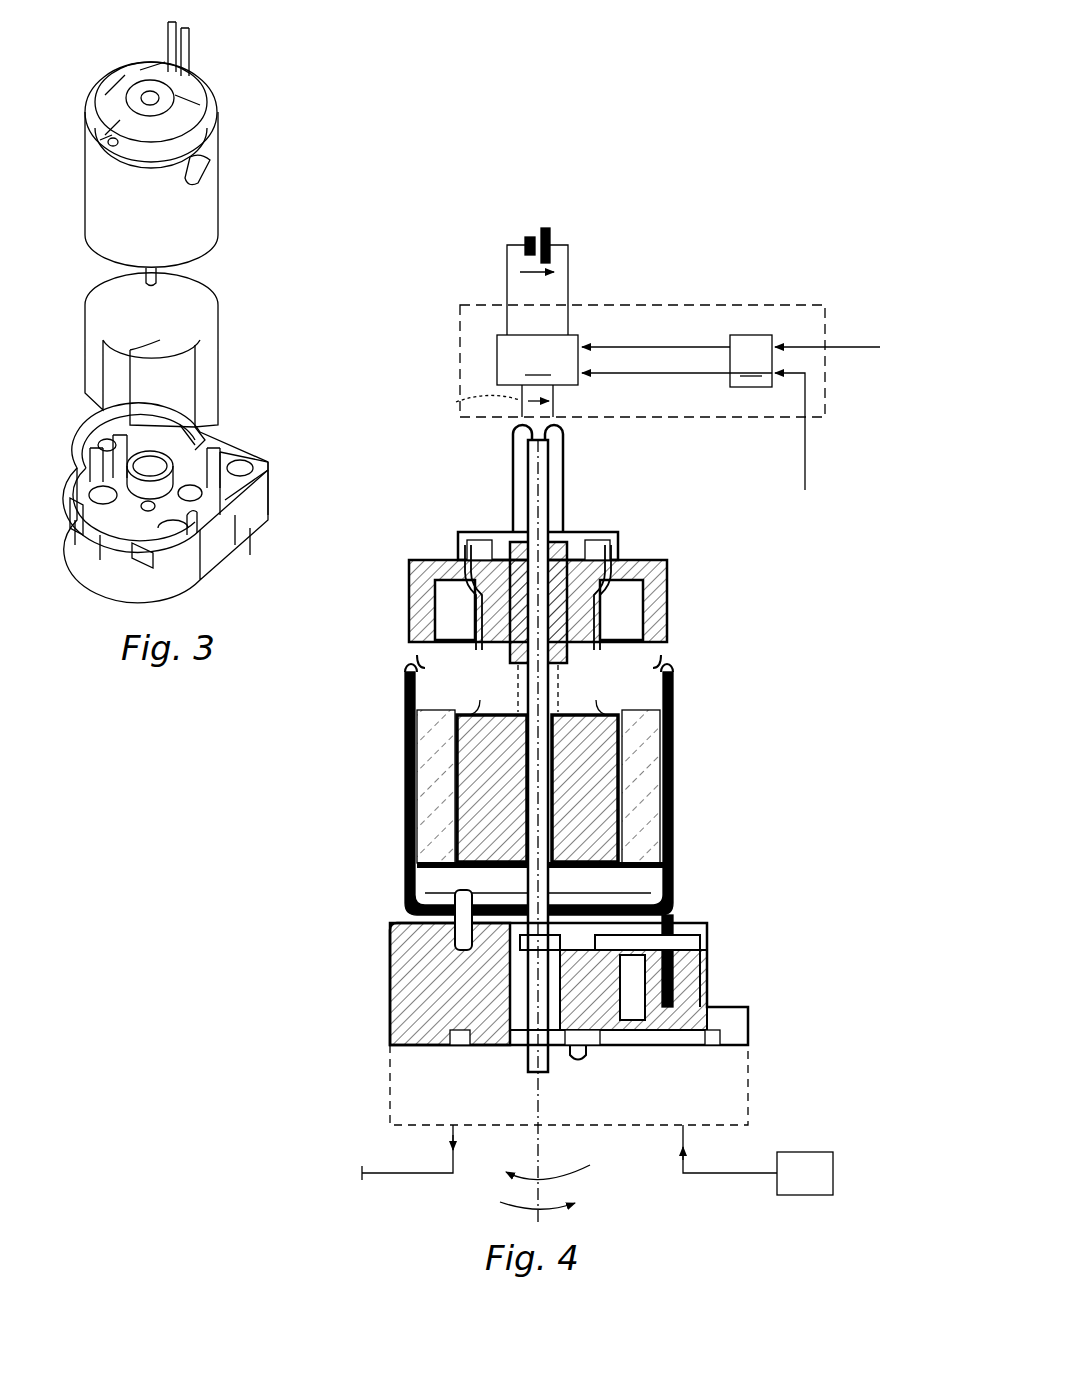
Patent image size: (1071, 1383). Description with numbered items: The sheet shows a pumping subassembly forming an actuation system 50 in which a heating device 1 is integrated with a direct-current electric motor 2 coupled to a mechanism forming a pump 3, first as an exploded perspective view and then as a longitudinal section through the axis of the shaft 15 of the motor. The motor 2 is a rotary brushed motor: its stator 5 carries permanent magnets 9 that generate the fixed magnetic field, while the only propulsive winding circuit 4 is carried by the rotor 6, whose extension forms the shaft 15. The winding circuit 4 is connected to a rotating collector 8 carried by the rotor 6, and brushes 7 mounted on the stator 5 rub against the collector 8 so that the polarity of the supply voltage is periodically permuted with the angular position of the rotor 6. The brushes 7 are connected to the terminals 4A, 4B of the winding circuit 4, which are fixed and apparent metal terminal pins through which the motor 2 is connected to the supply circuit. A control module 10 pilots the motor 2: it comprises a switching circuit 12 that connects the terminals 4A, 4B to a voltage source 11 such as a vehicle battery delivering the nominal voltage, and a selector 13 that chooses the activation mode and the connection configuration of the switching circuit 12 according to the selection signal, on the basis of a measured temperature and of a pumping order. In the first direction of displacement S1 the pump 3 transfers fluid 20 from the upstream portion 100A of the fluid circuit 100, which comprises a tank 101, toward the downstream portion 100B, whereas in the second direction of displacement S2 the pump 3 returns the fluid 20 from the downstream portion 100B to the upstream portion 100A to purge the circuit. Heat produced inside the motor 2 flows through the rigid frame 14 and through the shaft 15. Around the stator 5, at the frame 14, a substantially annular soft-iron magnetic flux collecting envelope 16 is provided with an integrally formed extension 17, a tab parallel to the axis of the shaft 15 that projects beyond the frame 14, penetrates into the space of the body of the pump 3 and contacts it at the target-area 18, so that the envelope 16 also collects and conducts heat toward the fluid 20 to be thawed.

In FIG. 4, the heating device 1 is at (660, 356).
In FIG. 3, the direct-current electric motor 2 is at (171, 150).
In FIG. 4, the direct-current electric motor 2 is at (555, 824).
In FIG. 3, the pump 3 is at (74, 492).
In FIG. 4, the pump 3 is at (388, 1043).
In FIG. 4, the propulsive winding circuit 4 is at (512, 706).
In FIG. 3, the terminal 4A is at (165, 42).
In FIG. 4, the terminal 4A is at (474, 538).
In FIG. 3, the terminal 4B is at (193, 46).
In FIG. 4, the terminal 4B is at (600, 540).
In FIG. 3, the stator 5 is at (80, 141).
In FIG. 4, the stator 5 is at (676, 612).
In FIG. 4, the rotor 6 is at (660, 800).
In FIG. 4, the brushes 7 is at (480, 628).
In FIG. 4, the rotating collector 8 is at (575, 667).
In FIG. 4, the permanent magnets 9 is at (416, 768).
In FIG. 4, the control module 10 is at (746, 305).
In FIG. 4, the voltage source 11 is at (535, 222).
In FIG. 4, the switching circuit 12 is at (537, 360).
In FIG. 4, the selector 13 is at (751, 361).
In FIG. 3, the frame 14 is at (205, 165).
In FIG. 4, the frame 14 is at (660, 652).
In FIG. 3, the shaft 15 is at (145, 278).
In FIG. 4, the shaft 15 is at (549, 1068).
In FIG. 3, the magnetic flux collecting envelope 16 is at (200, 305).
In FIG. 4, the magnetic flux collecting envelope 16 is at (672, 892).
In FIG. 3, the extension 17 is at (212, 432).
In FIG. 4, the extension 17 is at (700, 960).
In FIG. 3, the target-area 18 is at (218, 515).
In FIG. 4, the target-area 18 is at (680, 993).
In FIG. 4, the fluid 20 is at (630, 1048).
In FIG. 3, the actuation system 50 is at (207, 150).
In FIG. 4, the actuation system 50 is at (602, 837).
In FIG. 4, the fluid circuit 100 is at (602, 837).
In FIG. 4, the upstream portion 100A is at (731, 1183).
In FIG. 4, the downstream portion 100B is at (410, 1184).
In FIG. 4, the tank 101 is at (808, 1152).
In FIG. 4, the first direction of displacement S1 is at (590, 1165).
In FIG. 4, the second direction of displacement S2 is at (500, 1202).